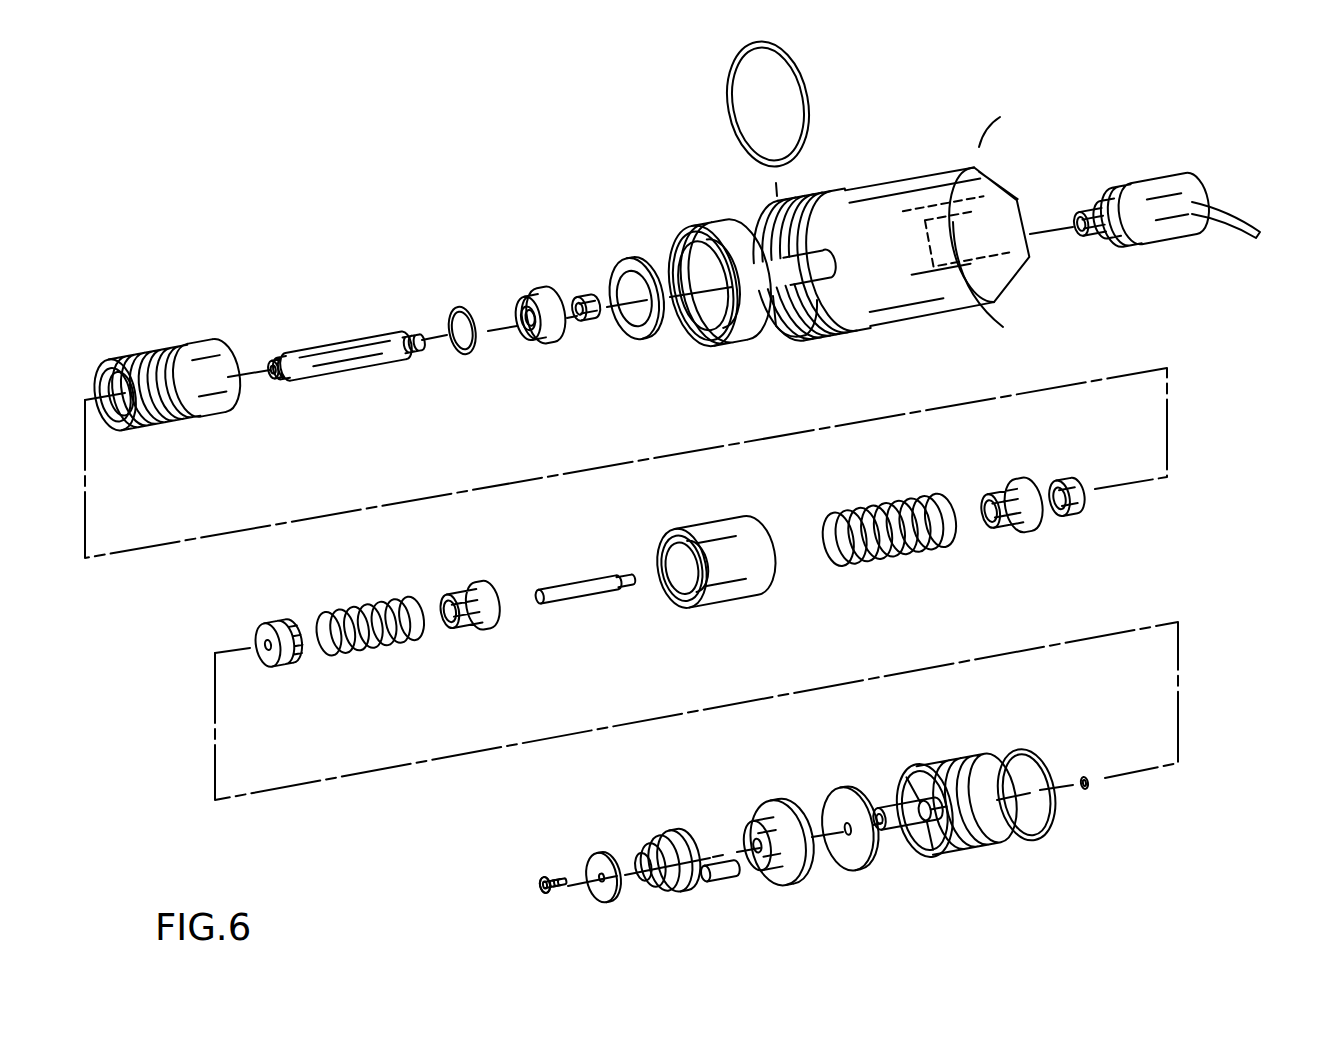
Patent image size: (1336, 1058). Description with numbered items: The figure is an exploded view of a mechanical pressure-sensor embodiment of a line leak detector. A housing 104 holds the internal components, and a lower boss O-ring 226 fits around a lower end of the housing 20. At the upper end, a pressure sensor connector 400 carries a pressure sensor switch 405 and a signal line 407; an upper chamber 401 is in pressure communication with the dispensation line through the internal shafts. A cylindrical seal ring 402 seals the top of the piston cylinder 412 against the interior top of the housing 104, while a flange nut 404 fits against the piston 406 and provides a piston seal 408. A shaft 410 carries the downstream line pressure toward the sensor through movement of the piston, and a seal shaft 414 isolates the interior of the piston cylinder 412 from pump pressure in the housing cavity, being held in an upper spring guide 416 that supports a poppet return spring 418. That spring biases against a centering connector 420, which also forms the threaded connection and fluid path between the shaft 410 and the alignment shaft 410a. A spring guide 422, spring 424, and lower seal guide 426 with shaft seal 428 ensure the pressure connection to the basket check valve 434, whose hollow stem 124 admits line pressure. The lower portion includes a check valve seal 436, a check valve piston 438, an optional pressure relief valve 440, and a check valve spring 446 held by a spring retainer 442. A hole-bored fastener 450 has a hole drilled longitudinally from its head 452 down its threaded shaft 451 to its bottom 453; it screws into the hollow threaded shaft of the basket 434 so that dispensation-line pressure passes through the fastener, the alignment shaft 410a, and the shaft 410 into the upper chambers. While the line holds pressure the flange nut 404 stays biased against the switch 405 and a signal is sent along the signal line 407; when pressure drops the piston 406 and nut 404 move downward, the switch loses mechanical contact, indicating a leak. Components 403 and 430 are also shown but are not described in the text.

The housing 20 is at (979, 150).
The housing 104 is at (906, 327).
The hollow stem 124 is at (892, 835).
The lower boss O-ring 226 is at (737, 112).
The pressure sensor connector 400 is at (1172, 182).
The upper chamber 401 is at (997, 240).
The housing body 403 is at (999, 286).
The cylindrical seal ring 402 is at (653, 337).
The flange nut 404 is at (590, 323).
The pressure sensor switch 405 is at (1087, 210).
The piston 406 is at (545, 345).
The signal line 407 is at (1257, 220).
The piston seal 408 is at (472, 360).
The shaft 410 is at (353, 372).
The alignment shaft 410a is at (585, 602).
The piston cylinder 412 is at (163, 423).
The seal shaft 414 is at (1070, 478).
The upper spring guide 416 is at (1025, 536).
The poppet return spring 418 is at (909, 553).
The centering connector 420 is at (761, 592).
The spring guide 422 is at (478, 630).
The spring 424 is at (402, 640).
The lower seal guide 426 is at (284, 662).
The shaft seal 428 is at (1087, 773).
The O-ring 430 is at (1044, 840).
The basket check valve 434 is at (955, 765).
The check valve seal 436 is at (840, 787).
The check valve piston 438 is at (775, 800).
The pressure relief valve 440 is at (733, 877).
The spring retainer 442 is at (612, 903).
The check valve spring 446 is at (686, 892).
The hole-bored fastener 450 is at (557, 896).
The threaded shaft 451 is at (558, 882).
The head 452 is at (540, 880).
The bottom 453 is at (563, 885).